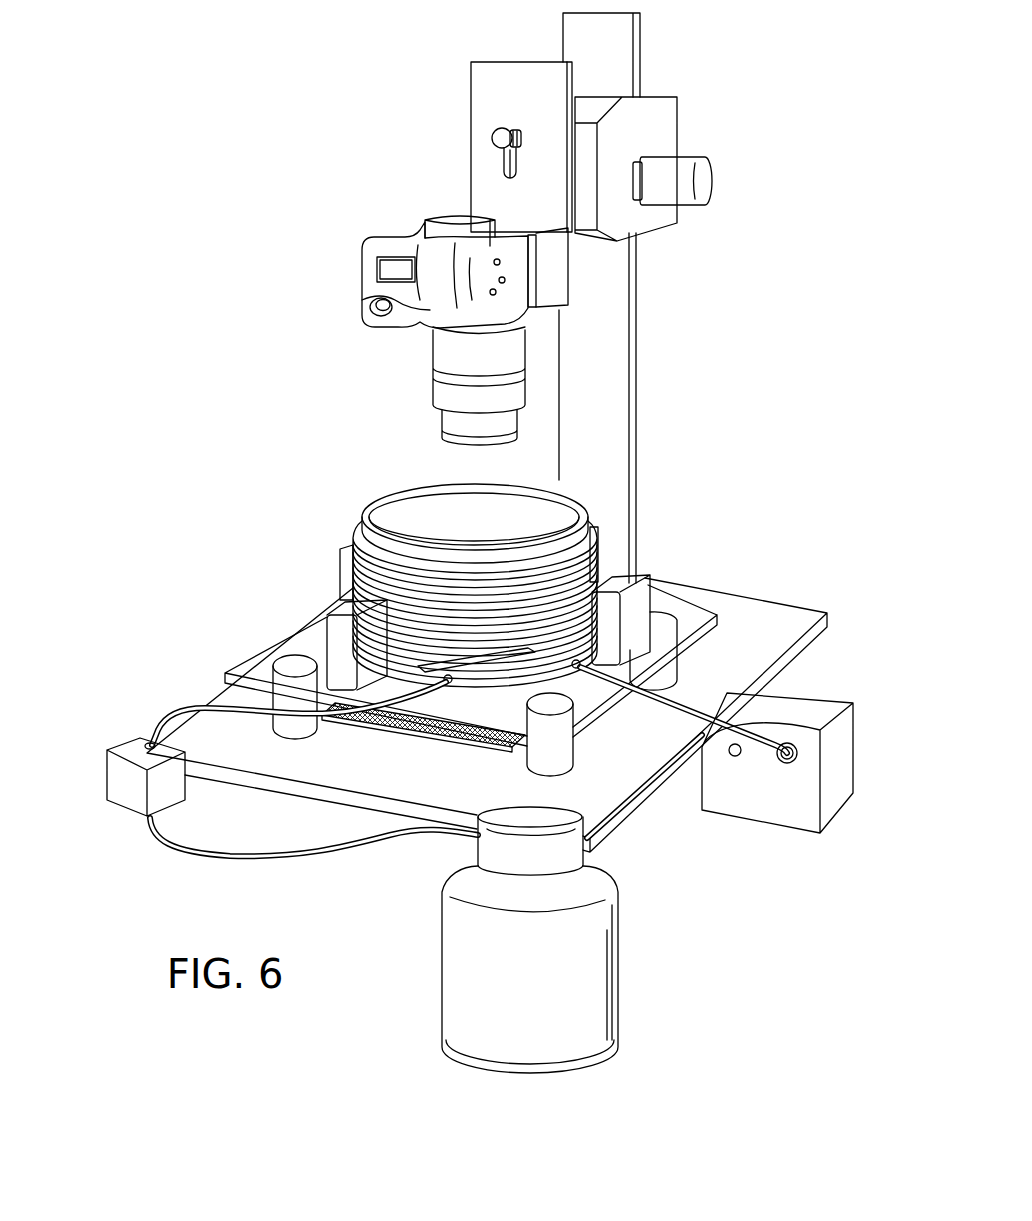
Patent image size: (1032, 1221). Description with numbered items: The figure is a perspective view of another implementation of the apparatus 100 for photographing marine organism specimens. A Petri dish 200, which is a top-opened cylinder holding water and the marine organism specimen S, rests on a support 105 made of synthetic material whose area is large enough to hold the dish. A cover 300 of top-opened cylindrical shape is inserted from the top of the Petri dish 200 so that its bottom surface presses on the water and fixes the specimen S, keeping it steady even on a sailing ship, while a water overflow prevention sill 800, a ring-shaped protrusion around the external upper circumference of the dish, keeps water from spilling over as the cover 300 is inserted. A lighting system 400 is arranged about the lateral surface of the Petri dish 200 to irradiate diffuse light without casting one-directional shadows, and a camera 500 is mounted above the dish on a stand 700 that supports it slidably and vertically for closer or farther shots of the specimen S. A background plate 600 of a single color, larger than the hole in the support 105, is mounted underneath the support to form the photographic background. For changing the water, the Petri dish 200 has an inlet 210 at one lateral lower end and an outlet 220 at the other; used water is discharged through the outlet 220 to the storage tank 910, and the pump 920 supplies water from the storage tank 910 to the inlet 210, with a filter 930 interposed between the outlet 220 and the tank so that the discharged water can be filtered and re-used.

The apparatus for photographing marine specimen 100 is at (277, 116).
The support 105 is at (693, 622).
The Petri dish 200 is at (353, 578).
The inlet 210 is at (581, 668).
The outlet 220 is at (448, 684).
The cover 300 is at (410, 485).
The lighting system 400 is at (333, 634).
The camera 500 is at (433, 355).
The background plate 600 is at (318, 725).
The stand 700 is at (611, 331).
The water overflow prevention sill 800 is at (358, 533).
The storage tank 910 is at (598, 958).
The pump 920 is at (848, 745).
The filter 930 is at (115, 780).
The marine organism specimen S is at (497, 652).